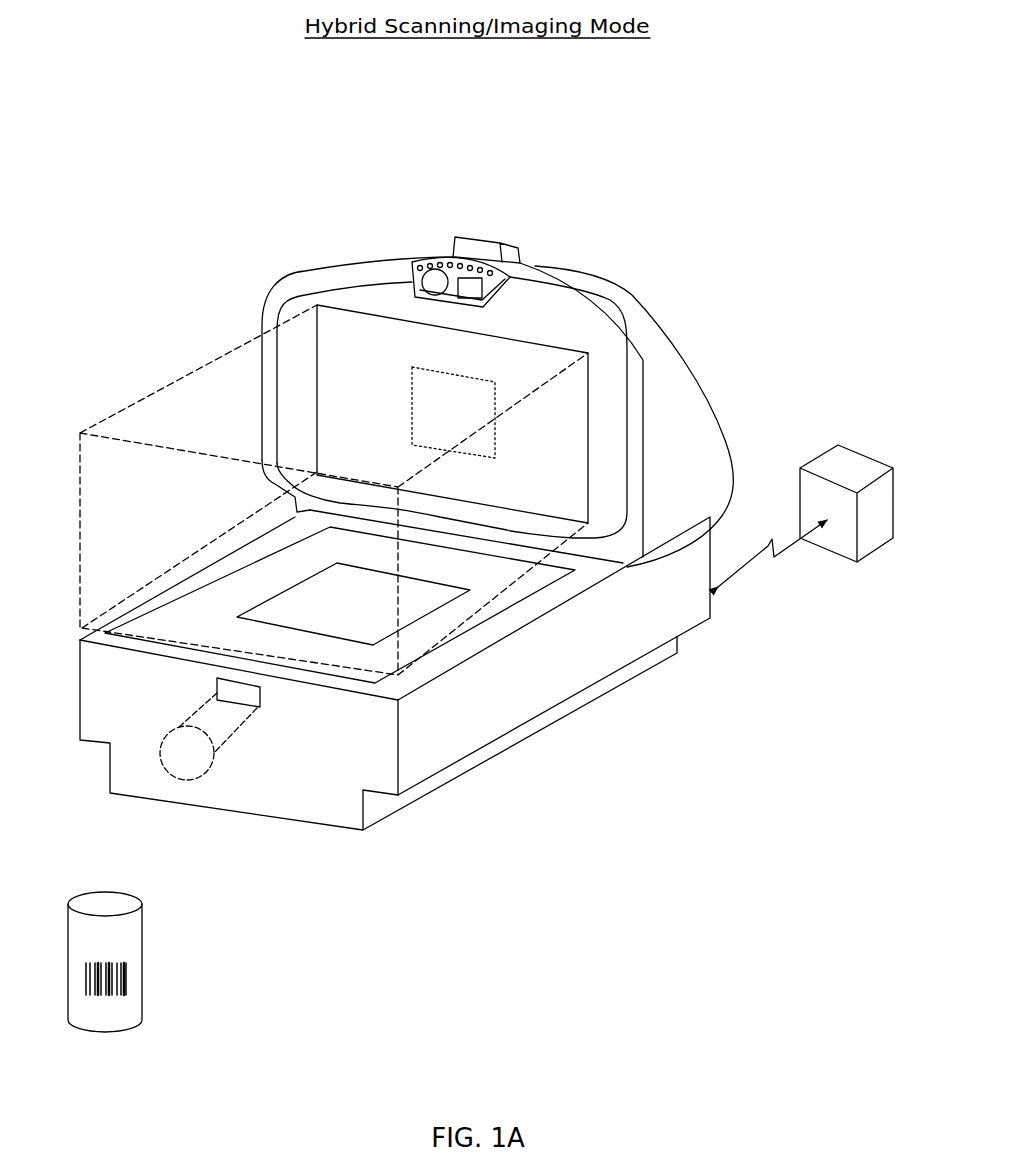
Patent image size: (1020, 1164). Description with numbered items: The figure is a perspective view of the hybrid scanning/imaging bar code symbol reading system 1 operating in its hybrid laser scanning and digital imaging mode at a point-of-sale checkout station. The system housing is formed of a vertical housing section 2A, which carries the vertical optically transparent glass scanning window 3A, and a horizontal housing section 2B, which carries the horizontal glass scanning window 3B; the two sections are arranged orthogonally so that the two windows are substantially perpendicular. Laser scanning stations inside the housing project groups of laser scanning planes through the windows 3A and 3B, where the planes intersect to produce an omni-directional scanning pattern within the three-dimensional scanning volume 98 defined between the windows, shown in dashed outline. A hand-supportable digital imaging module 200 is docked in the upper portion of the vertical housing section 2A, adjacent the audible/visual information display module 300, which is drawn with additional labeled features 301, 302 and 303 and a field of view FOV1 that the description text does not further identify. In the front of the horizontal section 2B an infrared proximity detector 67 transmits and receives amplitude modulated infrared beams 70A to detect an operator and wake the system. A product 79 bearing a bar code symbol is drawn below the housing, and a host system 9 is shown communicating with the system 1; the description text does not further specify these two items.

The hybrid scanning/imaging bar code symbol reading system 1 is at (793, 220).
The vertical housing section 2A is at (654, 355).
The horizontal housing section 2B is at (630, 620).
The vertical scanning window 3A is at (561, 483).
The horizontal scanning window 3B is at (358, 608).
The host system 9 is at (850, 463).
The IR-based proximity detector 67 is at (265, 692).
The amplitude modulated IR beams 70A is at (187, 780).
The product with bar code 79 is at (138, 972).
The 3D scanning volume 98 is at (177, 381).
The hand-supportable digital imaging module 200 is at (483, 237).
The audible/visual information display subsystem 300 is at (528, 258).
The LED indicator row 301 is at (513, 280).
The display/button 302 is at (507, 297).
The field of view region on window 303 is at (428, 368).
The field of view of imaging camera FOV1 is at (412, 280).